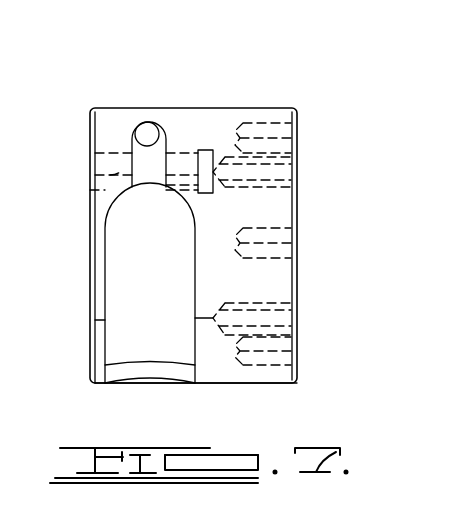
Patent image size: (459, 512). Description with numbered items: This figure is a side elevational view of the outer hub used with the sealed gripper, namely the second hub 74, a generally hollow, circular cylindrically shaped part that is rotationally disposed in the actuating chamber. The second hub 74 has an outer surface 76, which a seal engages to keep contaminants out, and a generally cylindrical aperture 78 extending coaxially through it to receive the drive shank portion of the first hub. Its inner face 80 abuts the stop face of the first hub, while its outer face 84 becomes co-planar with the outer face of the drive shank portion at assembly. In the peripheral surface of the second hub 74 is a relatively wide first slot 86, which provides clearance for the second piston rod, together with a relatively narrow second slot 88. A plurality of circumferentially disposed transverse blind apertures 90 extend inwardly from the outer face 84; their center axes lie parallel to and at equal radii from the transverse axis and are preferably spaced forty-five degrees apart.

The second hub 74 is at (234, 93).
The outer surface 76 is at (245, 383).
The aperture 78 is at (92, 183).
The inner face 80 is at (89, 127).
The outer face 84 is at (297, 118).
The first slot 86 is at (109, 356).
The second slot 88 is at (147, 124).
The blind apertures 90 is at (270, 126).